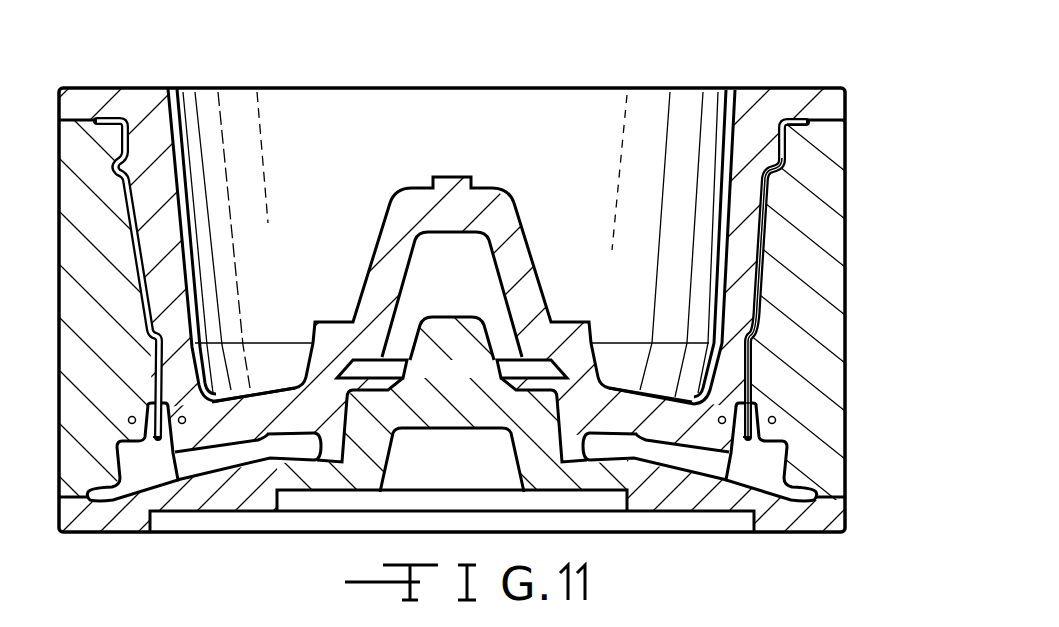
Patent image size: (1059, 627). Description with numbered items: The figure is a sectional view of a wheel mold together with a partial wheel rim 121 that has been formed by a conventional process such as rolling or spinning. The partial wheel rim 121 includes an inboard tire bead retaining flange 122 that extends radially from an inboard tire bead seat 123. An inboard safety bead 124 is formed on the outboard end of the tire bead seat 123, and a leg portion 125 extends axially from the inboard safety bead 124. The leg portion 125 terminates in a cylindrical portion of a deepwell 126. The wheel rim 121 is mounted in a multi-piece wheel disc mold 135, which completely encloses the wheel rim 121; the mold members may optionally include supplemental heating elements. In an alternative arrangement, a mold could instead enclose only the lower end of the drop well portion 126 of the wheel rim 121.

The partial wheel rim 121 is at (763, 316).
The inboard tire bead retaining flange 122 is at (797, 120).
The inboard tire bead seat 123 is at (790, 143).
The inboard safety bead 124 is at (790, 166).
The leg portion 125 is at (770, 253).
The deepwell 126 is at (755, 363).
The multi-piece wheel disc mold 135 is at (727, 64).